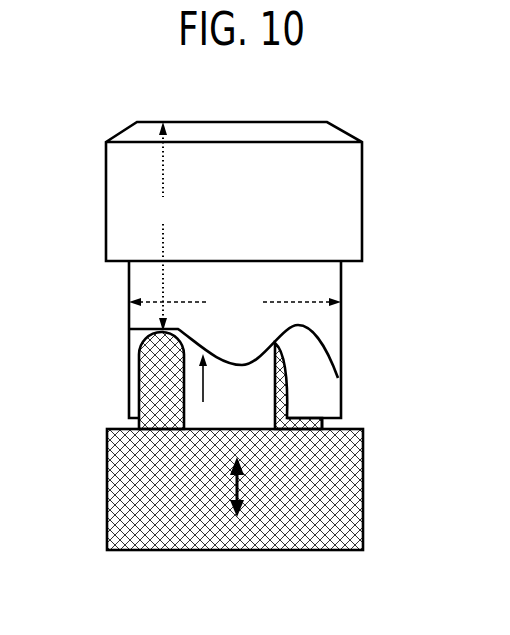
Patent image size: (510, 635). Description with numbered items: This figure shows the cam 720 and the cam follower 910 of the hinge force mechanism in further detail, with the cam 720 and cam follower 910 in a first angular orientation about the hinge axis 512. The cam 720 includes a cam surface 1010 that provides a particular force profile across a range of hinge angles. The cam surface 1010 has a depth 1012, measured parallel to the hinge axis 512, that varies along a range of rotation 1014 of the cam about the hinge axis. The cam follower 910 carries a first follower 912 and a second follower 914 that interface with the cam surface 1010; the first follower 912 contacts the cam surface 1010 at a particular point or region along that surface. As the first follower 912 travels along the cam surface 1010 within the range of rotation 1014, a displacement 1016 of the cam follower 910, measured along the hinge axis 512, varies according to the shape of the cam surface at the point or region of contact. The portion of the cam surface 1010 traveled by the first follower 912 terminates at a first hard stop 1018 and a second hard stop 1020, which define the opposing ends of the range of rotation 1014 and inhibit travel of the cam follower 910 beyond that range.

The hinge axis 512 is at (237, 120).
The cam 720 is at (127, 183).
The cam follower 910 is at (135, 490).
The first follower 912 is at (148, 387).
The second follower 914 is at (280, 405).
The cam surface 1010 is at (215, 390).
The depth 1012 is at (163, 226).
The range of rotation 1014 is at (235, 302).
The displacement 1016 is at (238, 488).
The first hard stop 1018 is at (137, 343).
The second hard stop 1020 is at (323, 397).